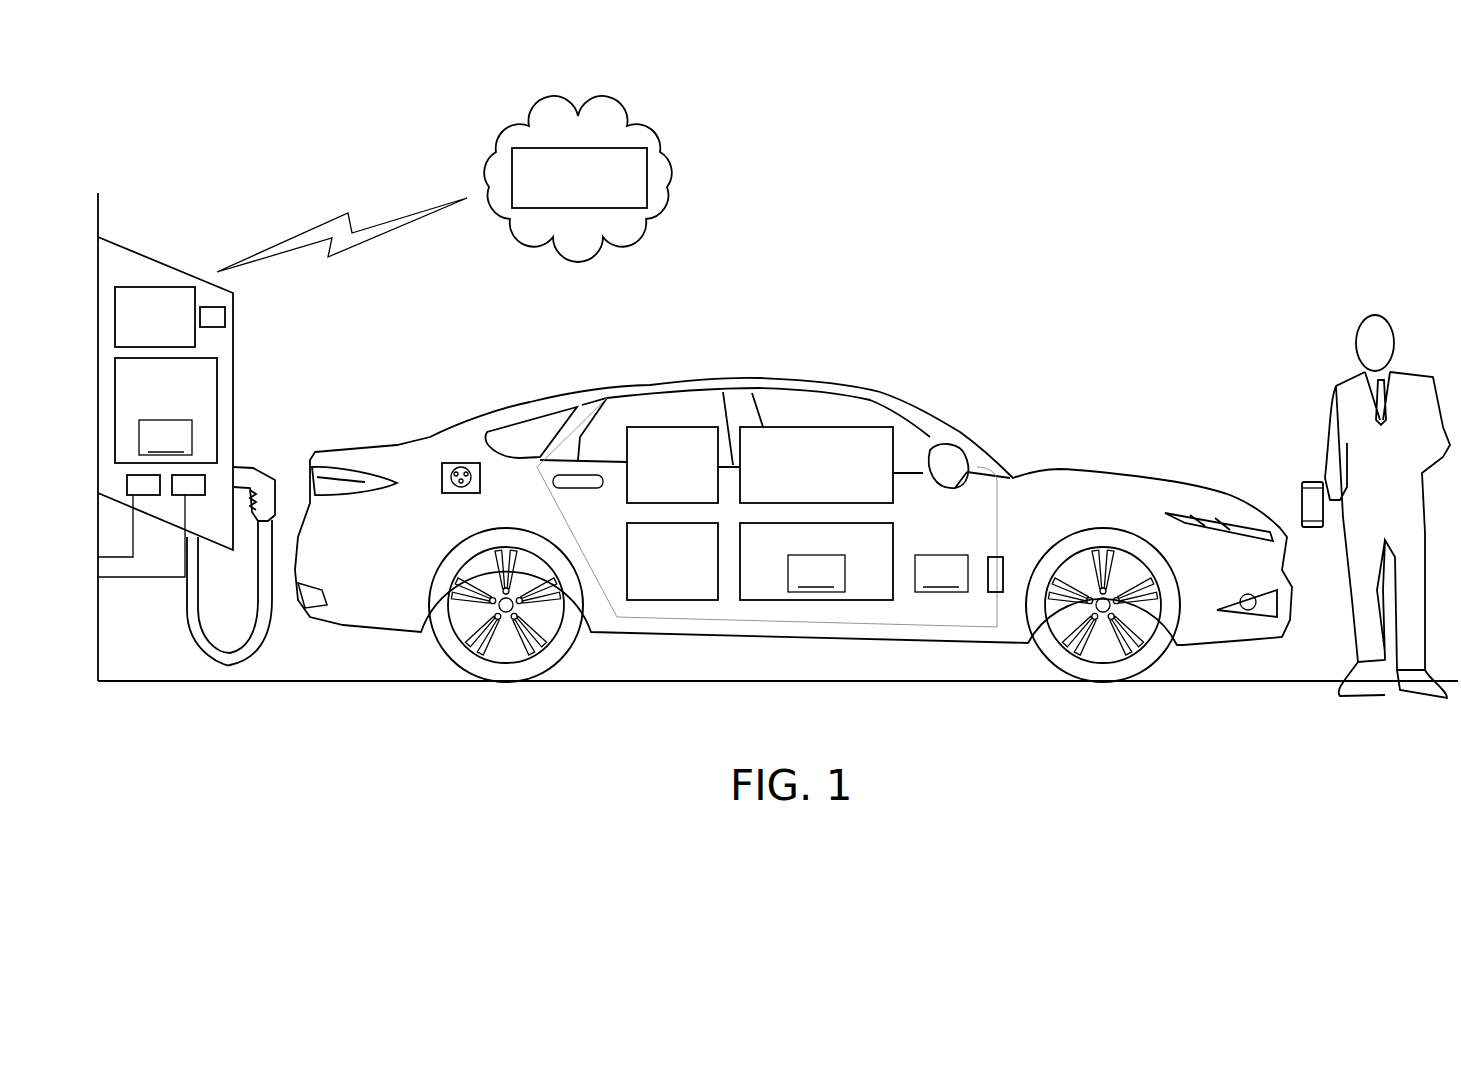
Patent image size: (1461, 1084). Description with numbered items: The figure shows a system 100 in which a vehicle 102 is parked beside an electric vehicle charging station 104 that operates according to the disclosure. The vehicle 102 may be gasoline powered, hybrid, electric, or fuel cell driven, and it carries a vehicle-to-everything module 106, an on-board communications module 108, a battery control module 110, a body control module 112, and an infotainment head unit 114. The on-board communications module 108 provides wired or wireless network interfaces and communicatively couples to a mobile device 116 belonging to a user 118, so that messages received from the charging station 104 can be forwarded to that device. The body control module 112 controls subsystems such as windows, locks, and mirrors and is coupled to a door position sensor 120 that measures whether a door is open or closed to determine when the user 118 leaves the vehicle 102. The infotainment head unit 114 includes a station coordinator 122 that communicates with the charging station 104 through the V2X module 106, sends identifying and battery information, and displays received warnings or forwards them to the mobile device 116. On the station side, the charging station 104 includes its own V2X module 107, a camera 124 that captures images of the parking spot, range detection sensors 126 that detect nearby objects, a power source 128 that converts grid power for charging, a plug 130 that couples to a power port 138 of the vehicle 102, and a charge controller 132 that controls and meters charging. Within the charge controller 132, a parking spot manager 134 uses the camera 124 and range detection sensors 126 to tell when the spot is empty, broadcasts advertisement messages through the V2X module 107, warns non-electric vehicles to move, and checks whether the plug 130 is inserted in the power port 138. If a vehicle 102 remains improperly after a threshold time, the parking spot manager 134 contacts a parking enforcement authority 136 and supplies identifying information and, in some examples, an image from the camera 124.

The system 100 is at (1068, 198).
The vehicle 102 is at (1140, 477).
The electric vehicle charging station 104 is at (128, 245).
The vehicle-to-everything (V2X) module 106 is at (672, 427).
The V2X module 107 is at (153, 287).
The on-board communications module (OBCM) 108 is at (672, 601).
The battery control module 110 is at (813, 427).
The body control module 112 is at (941, 573).
The infotainment head unit 114 is at (893, 540).
The mobile device 116 is at (1312, 481).
The user 118 is at (1413, 378).
The door position sensor 120 is at (1003, 567).
The station coordinator 122 is at (816, 573).
The camera 124 is at (225, 317).
The range detection sensors 126 is at (193, 495).
The power source 128 is at (130, 497).
The plug 130 is at (263, 473).
The charge controller 132 is at (217, 385).
The parking spot manager 134 is at (165, 437).
The parking enforcement authority 136 is at (647, 177).
The power port 138 is at (460, 463).